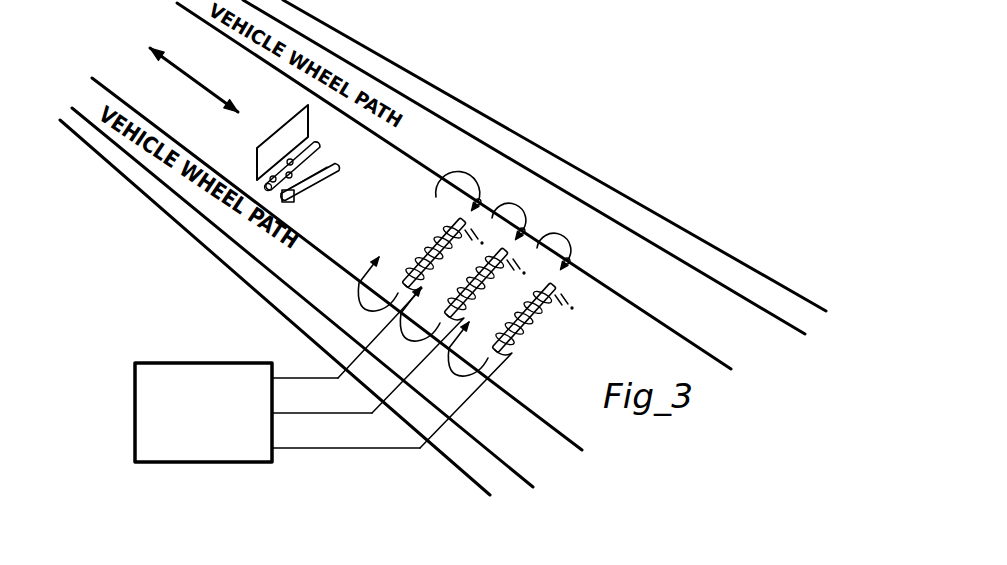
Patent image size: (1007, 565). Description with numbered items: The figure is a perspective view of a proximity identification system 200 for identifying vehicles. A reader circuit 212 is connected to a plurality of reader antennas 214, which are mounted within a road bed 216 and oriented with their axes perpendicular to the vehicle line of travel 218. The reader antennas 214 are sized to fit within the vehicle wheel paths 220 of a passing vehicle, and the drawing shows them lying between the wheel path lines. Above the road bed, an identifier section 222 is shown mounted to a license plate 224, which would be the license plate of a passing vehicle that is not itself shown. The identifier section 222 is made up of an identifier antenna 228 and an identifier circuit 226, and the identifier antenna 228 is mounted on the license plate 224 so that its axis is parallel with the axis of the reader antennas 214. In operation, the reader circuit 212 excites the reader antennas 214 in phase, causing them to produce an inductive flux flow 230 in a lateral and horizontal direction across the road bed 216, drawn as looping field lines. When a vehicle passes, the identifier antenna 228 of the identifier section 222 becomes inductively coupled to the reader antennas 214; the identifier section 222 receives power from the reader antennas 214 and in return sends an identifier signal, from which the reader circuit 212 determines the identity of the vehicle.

The proximity identification system 200 is at (331, 462).
The reader circuit 212 is at (200, 363).
The reader antennas 214 is at (450, 218).
The road bed 216 is at (410, 75).
The vehicle line of travel 218 is at (218, 90).
The vehicle wheel paths 220 is at (196, 18).
The identifier section 222 is at (328, 185).
The license plate 224 is at (284, 126).
The identifier circuit 226 is at (336, 168).
The identifier antenna 228 is at (311, 148).
The inductive flux flow 230 is at (472, 181).